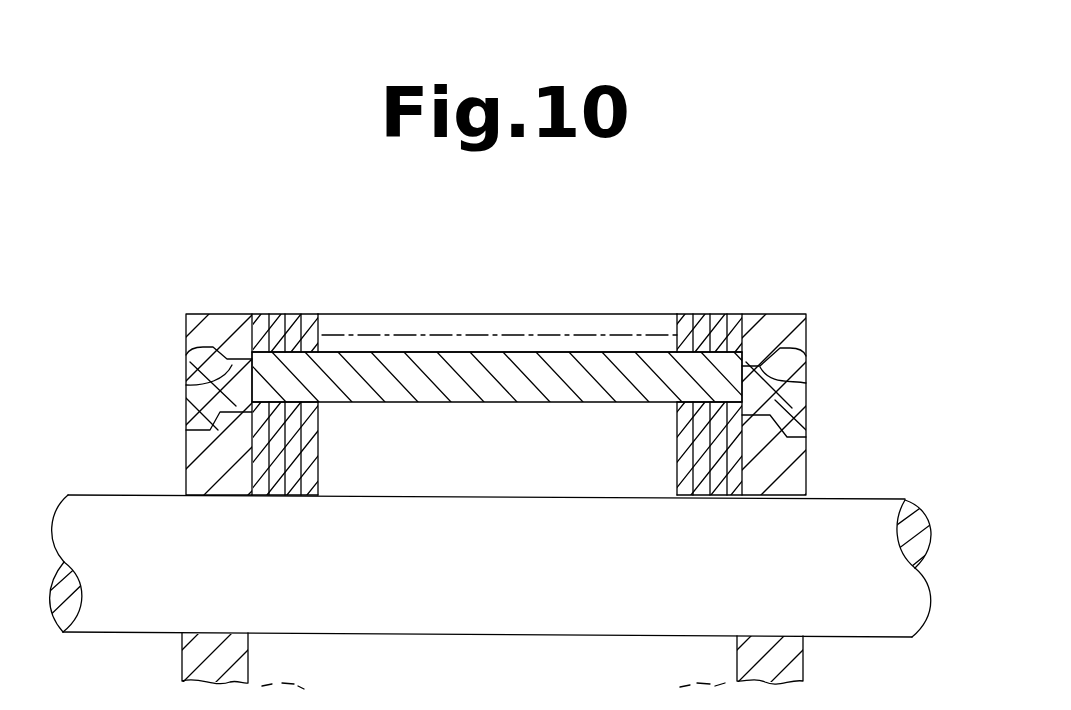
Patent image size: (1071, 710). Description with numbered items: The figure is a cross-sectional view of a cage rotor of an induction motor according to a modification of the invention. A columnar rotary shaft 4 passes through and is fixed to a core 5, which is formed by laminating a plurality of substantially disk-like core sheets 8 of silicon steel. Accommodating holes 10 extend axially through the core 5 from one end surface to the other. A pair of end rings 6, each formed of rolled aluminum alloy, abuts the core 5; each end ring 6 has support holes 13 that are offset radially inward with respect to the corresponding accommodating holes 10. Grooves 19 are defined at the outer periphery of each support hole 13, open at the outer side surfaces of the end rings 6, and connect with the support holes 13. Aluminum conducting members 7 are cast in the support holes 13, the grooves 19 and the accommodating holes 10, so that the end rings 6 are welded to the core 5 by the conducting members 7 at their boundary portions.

The rotary shaft 4 is at (86, 495).
The core 5 is at (260, 313).
The end ring 6 is at (186, 465).
The aluminum conducting member 7 is at (463, 367).
The core sheet 8 is at (716, 313).
The accommodating hole 10 is at (308, 352).
The support hole 13 is at (186, 383).
The groove 19 is at (186, 355).